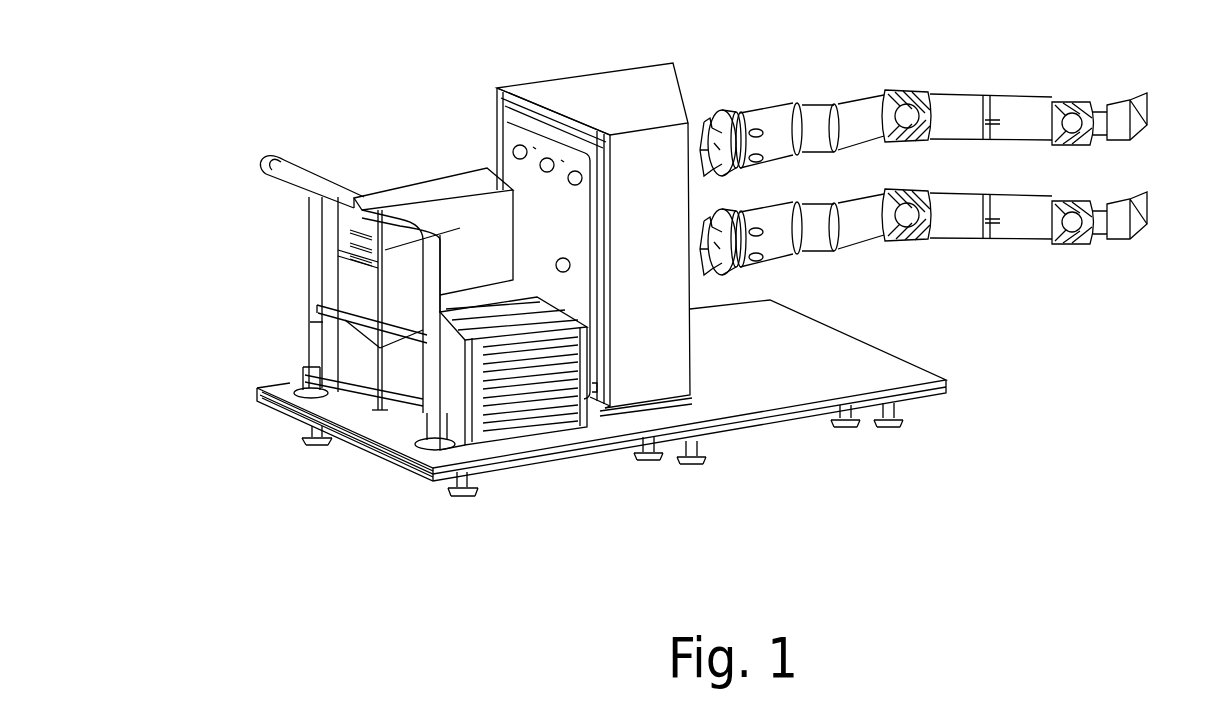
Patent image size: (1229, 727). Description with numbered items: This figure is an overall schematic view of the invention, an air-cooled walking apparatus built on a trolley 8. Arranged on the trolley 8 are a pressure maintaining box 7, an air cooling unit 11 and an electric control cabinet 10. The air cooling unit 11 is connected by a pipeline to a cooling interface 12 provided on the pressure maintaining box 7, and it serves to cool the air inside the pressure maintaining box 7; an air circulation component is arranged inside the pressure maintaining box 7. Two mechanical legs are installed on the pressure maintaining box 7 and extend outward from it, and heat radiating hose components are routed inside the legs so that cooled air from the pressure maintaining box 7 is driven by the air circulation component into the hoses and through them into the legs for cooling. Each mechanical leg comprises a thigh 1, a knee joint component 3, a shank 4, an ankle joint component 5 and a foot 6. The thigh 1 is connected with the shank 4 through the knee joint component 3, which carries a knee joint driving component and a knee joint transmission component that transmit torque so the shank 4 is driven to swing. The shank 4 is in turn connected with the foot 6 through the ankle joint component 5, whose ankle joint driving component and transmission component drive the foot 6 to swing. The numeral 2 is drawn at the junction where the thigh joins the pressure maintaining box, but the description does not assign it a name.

The thigh 1 is at (961, 91).
The connecting flange 2 is at (720, 120).
The knee joint component 3 is at (905, 104).
The shank 4 is at (1002, 108).
The ankle joint component 5 is at (1084, 108).
The foot 6 is at (1125, 112).
The pressure maintaining box 7 is at (642, 213).
The trolley 8 is at (757, 383).
The electric control cabinet 10 is at (468, 226).
The air cooling unit 11 is at (533, 408).
The cooling interface 12 is at (565, 262).